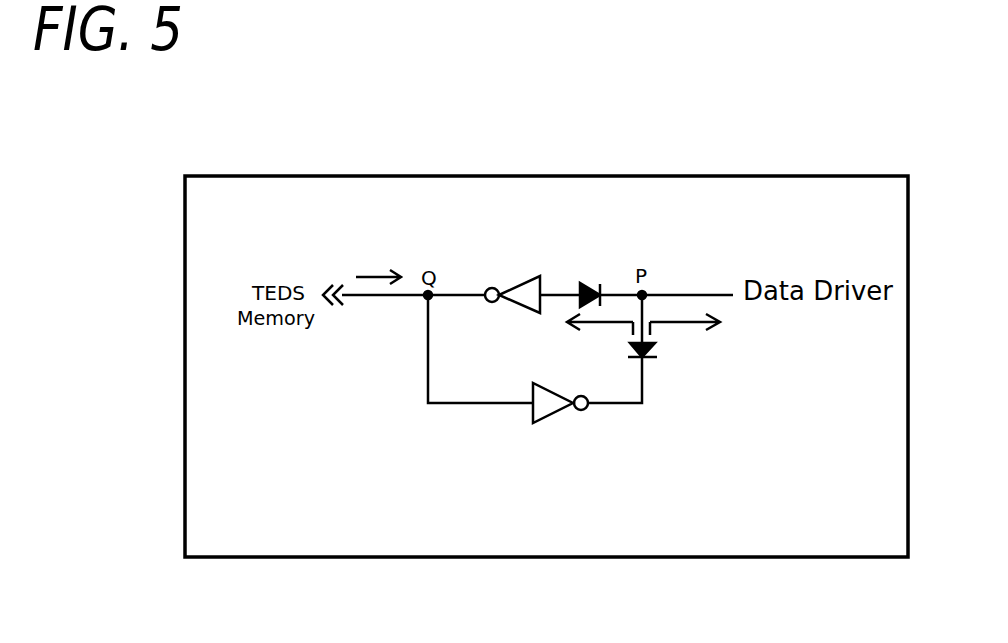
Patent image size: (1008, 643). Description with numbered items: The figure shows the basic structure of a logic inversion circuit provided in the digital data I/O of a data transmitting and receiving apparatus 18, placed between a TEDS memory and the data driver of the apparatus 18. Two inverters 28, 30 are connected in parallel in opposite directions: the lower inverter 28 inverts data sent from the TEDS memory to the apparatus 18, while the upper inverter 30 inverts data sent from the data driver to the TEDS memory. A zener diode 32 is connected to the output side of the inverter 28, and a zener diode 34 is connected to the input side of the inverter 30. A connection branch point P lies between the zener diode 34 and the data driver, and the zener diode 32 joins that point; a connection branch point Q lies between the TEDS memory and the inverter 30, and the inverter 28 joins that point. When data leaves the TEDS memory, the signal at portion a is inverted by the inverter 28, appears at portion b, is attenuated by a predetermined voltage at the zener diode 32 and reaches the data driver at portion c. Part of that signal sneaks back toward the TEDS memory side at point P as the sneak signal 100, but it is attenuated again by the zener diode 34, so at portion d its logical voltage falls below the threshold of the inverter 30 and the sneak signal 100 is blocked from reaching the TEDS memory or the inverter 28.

The data transmitting and receiving apparatus 18 is at (752, 175).
The inverter 28 is at (557, 418).
The inverter 30 is at (489, 286).
The zener diode 32 is at (655, 358).
The zener diode 34 is at (600, 283).
The sneak signal 100 is at (608, 326).
The portion a is at (382, 297).
The portion b is at (622, 405).
The portion c is at (685, 292).
The portion d is at (557, 291).